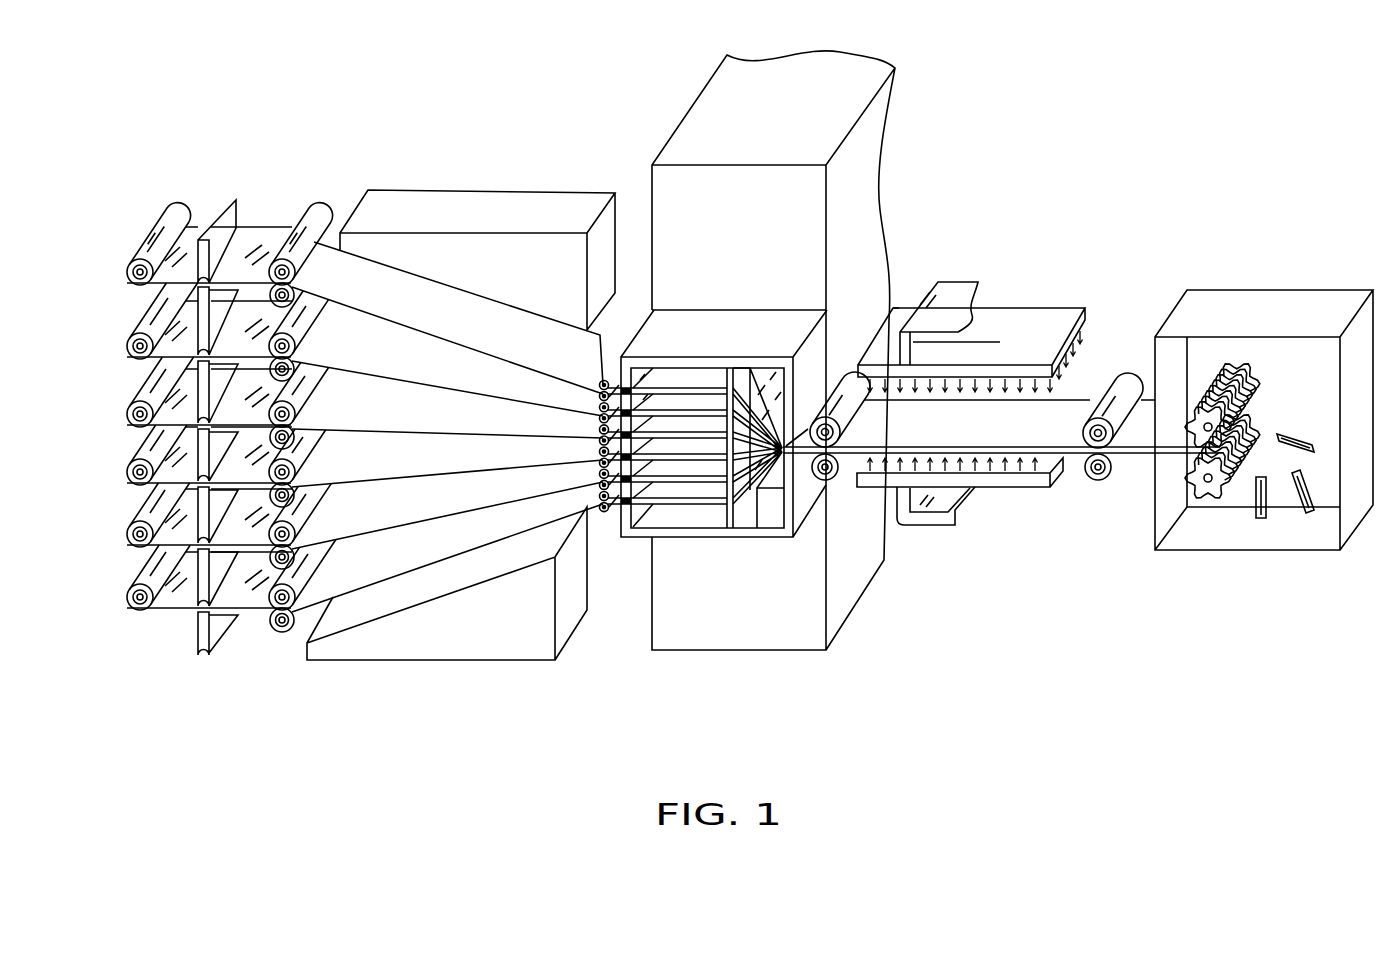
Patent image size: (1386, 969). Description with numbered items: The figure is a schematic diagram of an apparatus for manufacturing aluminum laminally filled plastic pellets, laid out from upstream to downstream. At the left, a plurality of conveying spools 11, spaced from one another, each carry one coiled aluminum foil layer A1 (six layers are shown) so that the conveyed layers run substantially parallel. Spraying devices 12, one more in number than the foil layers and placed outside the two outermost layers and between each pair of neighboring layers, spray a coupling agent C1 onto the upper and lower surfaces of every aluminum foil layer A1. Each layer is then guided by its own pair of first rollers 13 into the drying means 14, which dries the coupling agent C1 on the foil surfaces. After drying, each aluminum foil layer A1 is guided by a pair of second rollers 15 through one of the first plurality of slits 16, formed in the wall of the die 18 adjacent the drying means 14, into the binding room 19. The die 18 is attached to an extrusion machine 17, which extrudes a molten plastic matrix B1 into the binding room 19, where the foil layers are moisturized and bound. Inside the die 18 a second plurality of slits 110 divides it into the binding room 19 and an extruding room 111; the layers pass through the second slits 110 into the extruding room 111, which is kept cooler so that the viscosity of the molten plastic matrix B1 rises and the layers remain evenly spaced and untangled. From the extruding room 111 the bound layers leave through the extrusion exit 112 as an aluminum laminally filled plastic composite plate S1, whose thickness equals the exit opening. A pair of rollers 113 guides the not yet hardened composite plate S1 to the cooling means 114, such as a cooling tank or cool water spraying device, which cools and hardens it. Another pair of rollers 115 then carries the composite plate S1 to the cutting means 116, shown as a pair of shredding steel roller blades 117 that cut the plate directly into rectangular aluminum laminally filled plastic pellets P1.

The conveying spools 11 is at (128, 274).
The spraying devices 12 is at (232, 201).
The first plurality of pairs of rollers 13 is at (320, 214).
The drying means 14 is at (478, 205).
The second plurality of pairs of rollers 15 is at (618, 357).
The first plurality of slits 16 is at (620, 508).
The extrusion machine 17 is at (698, 122).
The die 18 is at (750, 329).
The binding room 19 is at (678, 518).
The second plurality of slits 110 is at (753, 518).
The extruding room 111 is at (752, 510).
The extrusion exit 112 is at (827, 480).
The pair of rollers 113 is at (855, 380).
The cooling means 114 is at (1040, 343).
The pair of rollers 115 is at (1131, 384).
The cutting means 116 is at (1252, 298).
The shredding steel roller blades 117 is at (1265, 396).
The aluminum foil layers A1 is at (205, 215).
The coupling agent C1 is at (242, 238).
The molten plastic matrix B1 is at (713, 510).
The aluminum laminally filled plastic composite plate S1 is at (1098, 400).
The aluminum laminally filled plastic pellets P1 is at (1307, 440).